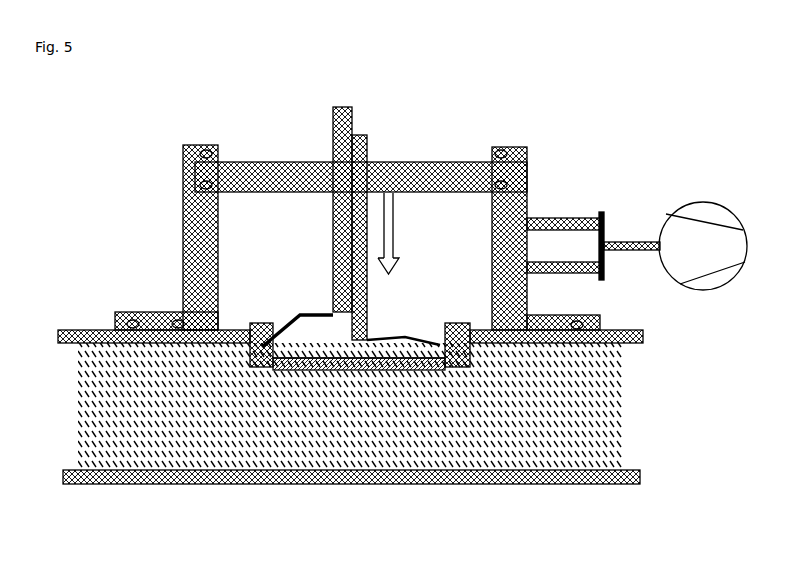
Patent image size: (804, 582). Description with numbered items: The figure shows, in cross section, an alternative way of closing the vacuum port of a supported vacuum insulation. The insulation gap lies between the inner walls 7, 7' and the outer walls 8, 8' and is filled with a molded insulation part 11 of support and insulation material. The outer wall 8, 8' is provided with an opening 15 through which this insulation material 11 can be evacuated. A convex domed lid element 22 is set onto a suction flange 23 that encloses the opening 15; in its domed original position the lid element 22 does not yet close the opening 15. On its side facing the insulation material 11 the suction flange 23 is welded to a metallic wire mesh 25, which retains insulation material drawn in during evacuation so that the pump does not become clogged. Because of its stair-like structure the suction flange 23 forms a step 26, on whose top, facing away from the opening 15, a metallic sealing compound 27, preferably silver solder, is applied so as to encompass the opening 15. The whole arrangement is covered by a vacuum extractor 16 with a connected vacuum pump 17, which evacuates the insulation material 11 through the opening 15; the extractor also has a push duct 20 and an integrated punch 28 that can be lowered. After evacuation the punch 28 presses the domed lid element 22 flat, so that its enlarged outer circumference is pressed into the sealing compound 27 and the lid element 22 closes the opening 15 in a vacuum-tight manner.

The inner wall 7 is at (338, 490).
The inner wall 7' is at (338, 490).
The outer wall 8 is at (341, 308).
The outer wall 8' is at (341, 308).
The molded insulation part 11 is at (327, 347).
The opening 15 is at (395, 357).
The vacuum extractor 16 is at (527, 212).
The vacuum pump 17 is at (680, 229).
The push duct 20 is at (373, 173).
The convex domed lid element 22 is at (286, 334).
The suction flange 23 is at (503, 428).
The metallic wire mesh 25 is at (343, 369).
The step 26 is at (465, 355).
The sealing compound 27 is at (256, 352).
The punch 28 is at (353, 120).